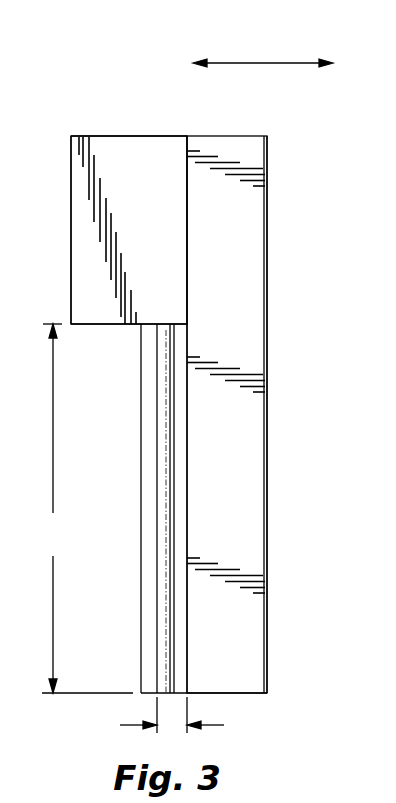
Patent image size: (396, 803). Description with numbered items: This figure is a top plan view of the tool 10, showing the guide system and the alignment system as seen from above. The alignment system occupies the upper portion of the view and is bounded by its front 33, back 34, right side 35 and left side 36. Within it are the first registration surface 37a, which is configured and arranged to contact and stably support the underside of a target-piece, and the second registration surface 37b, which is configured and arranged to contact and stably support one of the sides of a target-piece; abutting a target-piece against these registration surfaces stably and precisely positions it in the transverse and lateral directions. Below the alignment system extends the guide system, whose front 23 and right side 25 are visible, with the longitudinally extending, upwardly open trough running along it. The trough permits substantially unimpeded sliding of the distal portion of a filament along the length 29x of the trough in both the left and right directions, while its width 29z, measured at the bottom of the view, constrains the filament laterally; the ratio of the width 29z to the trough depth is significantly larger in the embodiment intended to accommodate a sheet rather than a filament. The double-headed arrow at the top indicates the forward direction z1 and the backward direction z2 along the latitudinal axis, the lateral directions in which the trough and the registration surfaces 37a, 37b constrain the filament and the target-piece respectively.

The tool 10 is at (326, 111).
The front of guide system 23 is at (141, 468).
The right side of guide system 25 is at (252, 694).
The length of trough 29x is at (86, 508).
The width of trough 29z is at (156, 716).
The front of alignment system 33 is at (70, 178).
The back of alignment system 34 is at (266, 240).
The right side of alignment system 35 is at (111, 325).
The left side of alignment system 36 is at (103, 136).
The first registration surface 37a is at (123, 230).
The second registration surface 37b is at (187, 167).
The forward direction z1 is at (261, 54).
The backward direction z2 is at (321, 49).